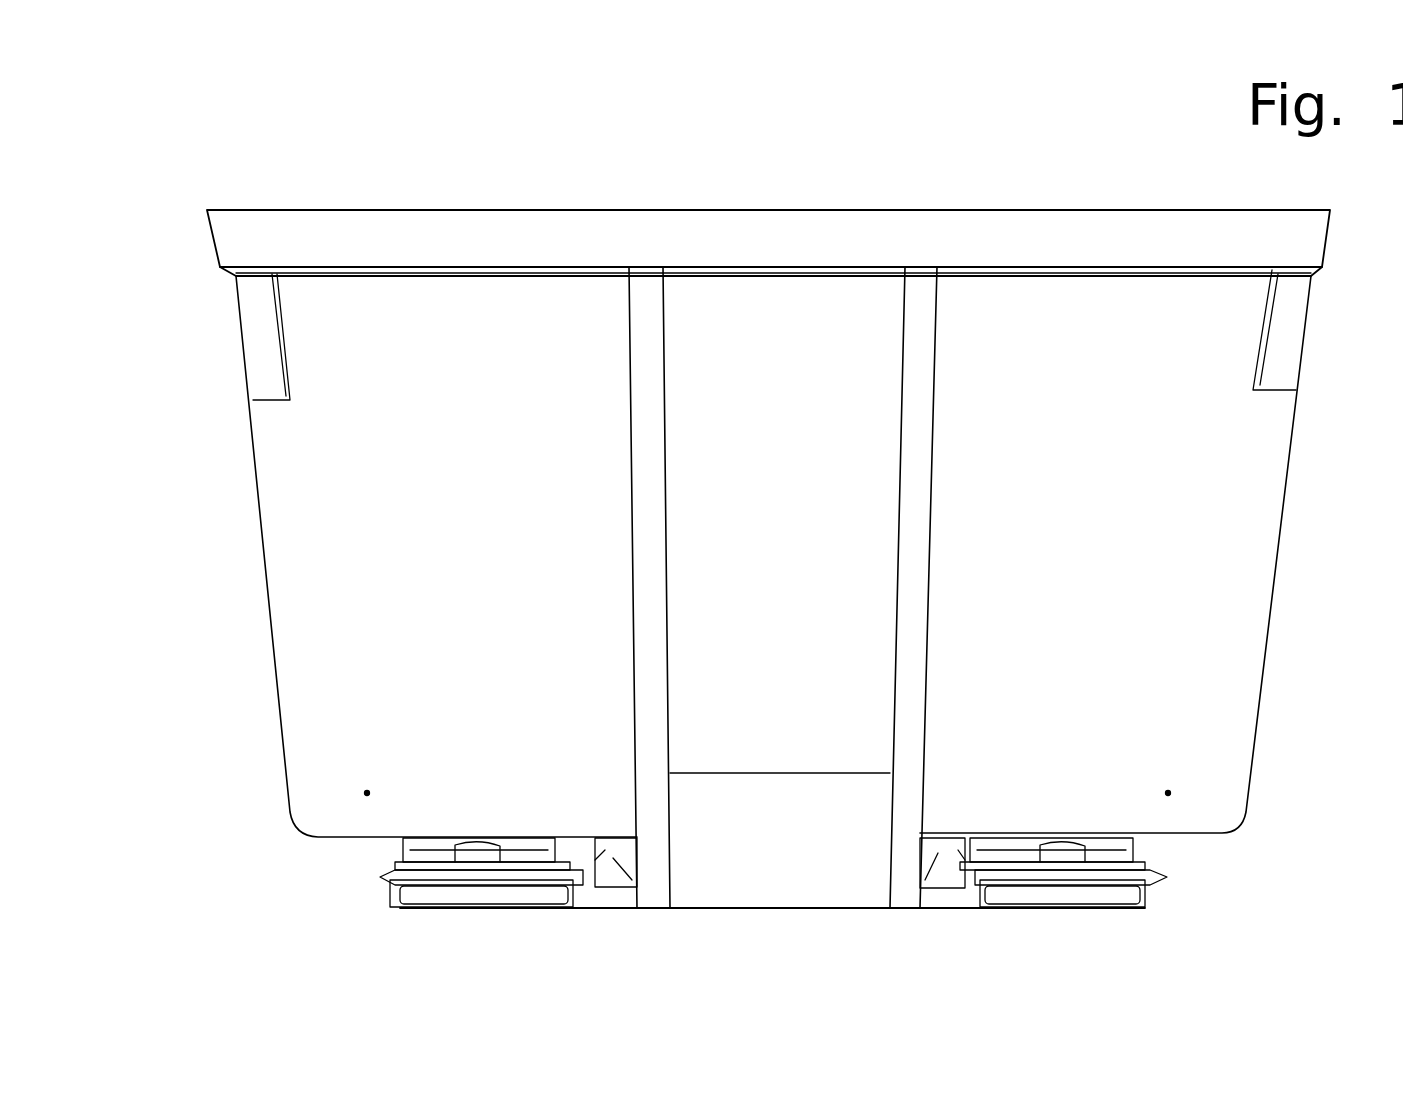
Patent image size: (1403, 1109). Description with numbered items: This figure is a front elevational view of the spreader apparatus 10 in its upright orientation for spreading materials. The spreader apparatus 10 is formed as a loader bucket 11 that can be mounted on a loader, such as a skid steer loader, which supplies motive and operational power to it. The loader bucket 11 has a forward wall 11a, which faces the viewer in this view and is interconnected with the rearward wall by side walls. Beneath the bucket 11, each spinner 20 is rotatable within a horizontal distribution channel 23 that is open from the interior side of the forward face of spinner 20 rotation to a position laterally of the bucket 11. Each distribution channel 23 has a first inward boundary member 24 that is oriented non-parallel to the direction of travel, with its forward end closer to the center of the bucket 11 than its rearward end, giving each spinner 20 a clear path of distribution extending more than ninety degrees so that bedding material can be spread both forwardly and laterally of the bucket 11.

The spreader apparatus 10 is at (330, 158).
The loader bucket 11 is at (740, 238).
The forward wall 11a is at (1190, 520).
The horizontal distribution channel 23 is at (318, 862).
The spinner 20 is at (445, 855).
The first inward boundary member 24 is at (613, 858).